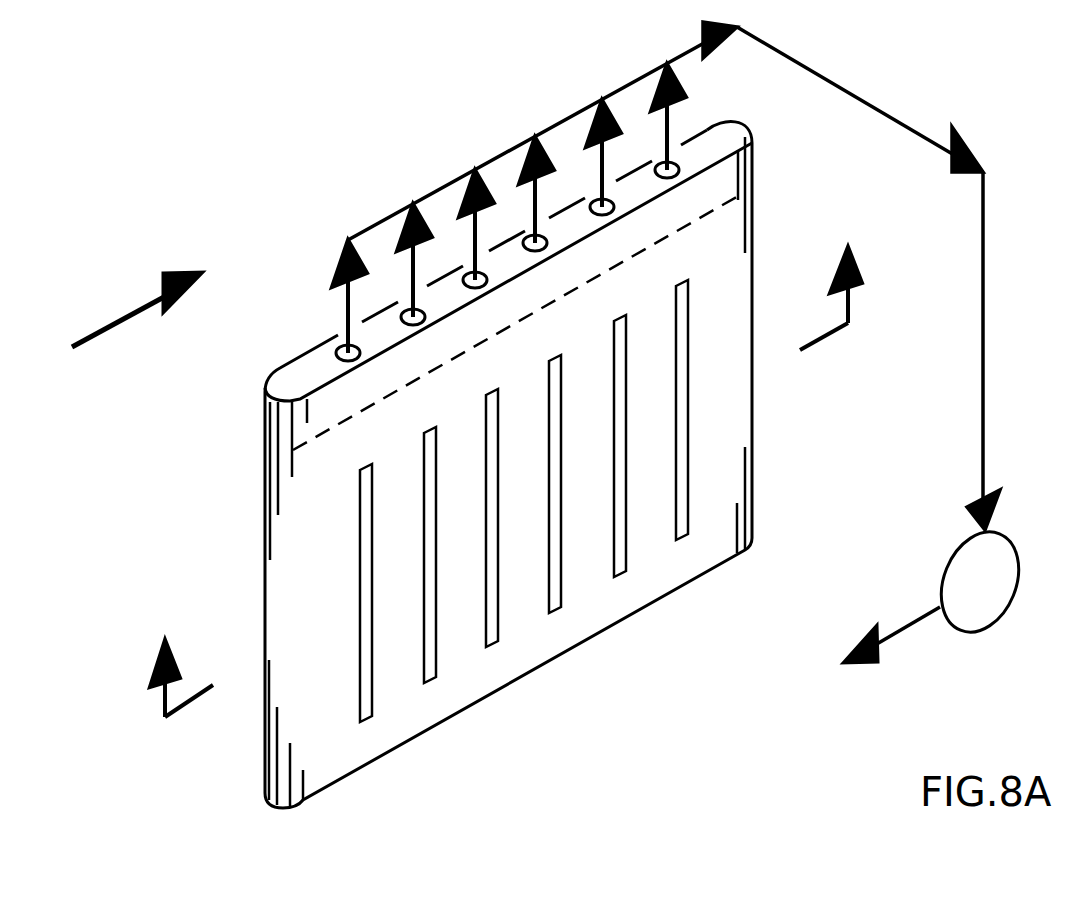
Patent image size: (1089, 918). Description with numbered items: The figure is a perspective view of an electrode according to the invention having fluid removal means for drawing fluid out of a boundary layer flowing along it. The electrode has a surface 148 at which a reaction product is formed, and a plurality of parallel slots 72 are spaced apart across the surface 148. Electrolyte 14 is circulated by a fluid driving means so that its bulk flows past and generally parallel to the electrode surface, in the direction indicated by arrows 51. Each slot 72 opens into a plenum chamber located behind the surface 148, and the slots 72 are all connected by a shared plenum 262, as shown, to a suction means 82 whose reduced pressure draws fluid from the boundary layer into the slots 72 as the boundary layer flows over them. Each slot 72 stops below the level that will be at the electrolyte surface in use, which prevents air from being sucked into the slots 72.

The electrolyte 14 is at (173, 130).
The arrows 51 is at (137, 307).
The slots 72 is at (437, 680).
The pump 82 is at (983, 630).
The surface 148 is at (573, 650).
The shared plenum 262 is at (848, 88).